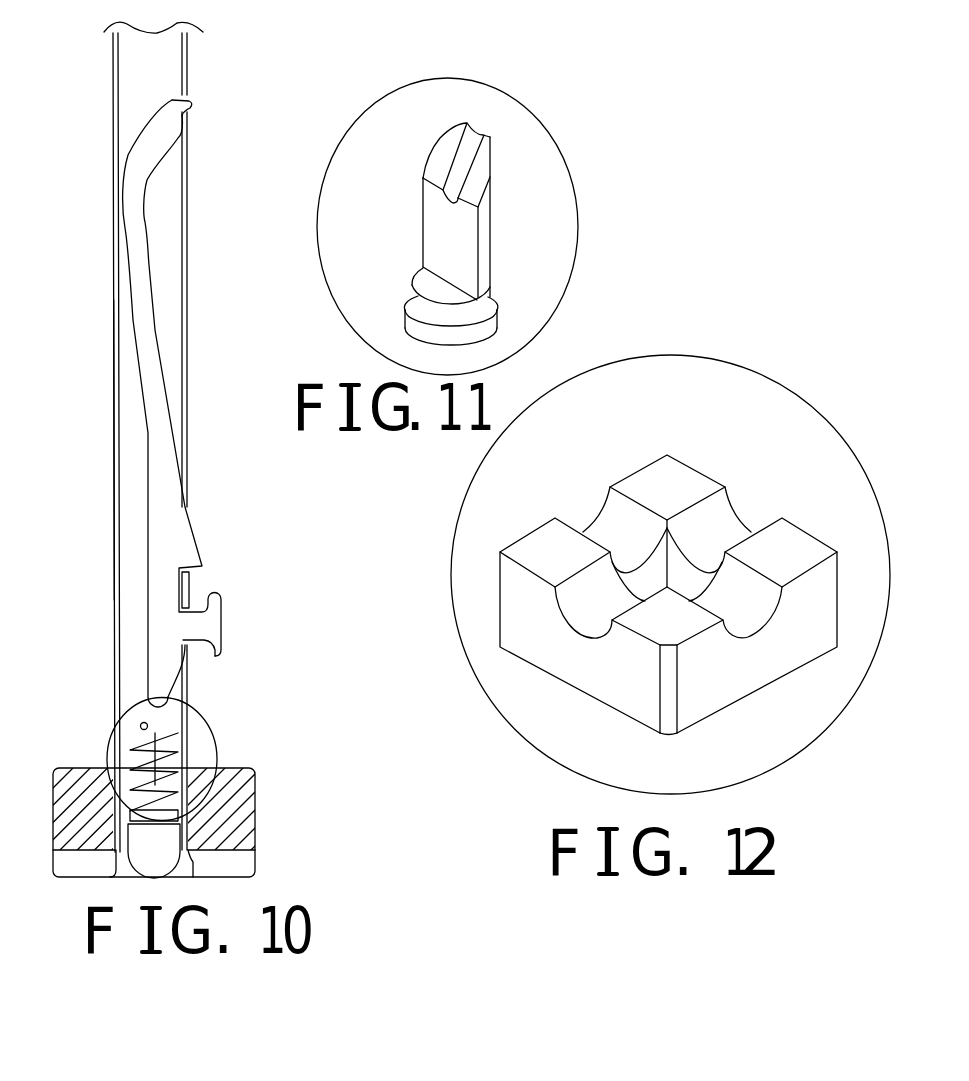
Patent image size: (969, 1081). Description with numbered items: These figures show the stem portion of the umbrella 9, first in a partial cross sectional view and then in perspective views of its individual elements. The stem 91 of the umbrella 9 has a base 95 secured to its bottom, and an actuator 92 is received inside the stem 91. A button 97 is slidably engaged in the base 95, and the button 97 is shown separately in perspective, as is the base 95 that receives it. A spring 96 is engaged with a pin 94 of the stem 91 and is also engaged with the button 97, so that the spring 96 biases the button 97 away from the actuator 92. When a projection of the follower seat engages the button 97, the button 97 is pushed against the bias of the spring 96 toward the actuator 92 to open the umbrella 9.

In FIG. 10, the umbrella 9 is at (136, 75).
In FIG. 10, the stem 91 is at (119, 433).
In FIG. 10, the actuator 92 is at (168, 547).
In FIG. 10, the pin 94 is at (141, 724).
In FIG. 12, the base 95 is at (673, 487).
In FIG. 10, the spring 96 is at (155, 783).
In FIG. 10, the button 97 is at (155, 785).
In FIG. 11, the button 97 is at (433, 240).